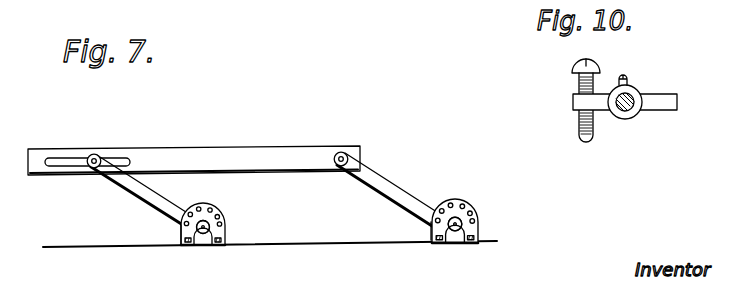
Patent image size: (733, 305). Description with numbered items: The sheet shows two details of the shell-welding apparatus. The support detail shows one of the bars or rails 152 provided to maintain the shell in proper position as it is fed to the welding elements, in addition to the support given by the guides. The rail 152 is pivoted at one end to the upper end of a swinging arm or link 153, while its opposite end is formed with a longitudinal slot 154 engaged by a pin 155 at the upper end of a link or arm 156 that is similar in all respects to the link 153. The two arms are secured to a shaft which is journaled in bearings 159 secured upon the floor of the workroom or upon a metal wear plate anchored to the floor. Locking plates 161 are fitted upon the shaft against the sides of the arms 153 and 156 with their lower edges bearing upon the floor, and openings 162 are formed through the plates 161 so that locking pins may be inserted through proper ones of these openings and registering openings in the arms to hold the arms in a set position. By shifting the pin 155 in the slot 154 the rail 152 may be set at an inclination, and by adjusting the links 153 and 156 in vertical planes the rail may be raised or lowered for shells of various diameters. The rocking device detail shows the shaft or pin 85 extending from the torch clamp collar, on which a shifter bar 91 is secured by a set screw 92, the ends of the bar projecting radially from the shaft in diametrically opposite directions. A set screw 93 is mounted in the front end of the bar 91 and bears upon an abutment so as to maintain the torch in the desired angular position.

In FIG. 7, the bar or rail 152 is at (194, 149).
In FIG. 7, the swinging arm or link 153 is at (382, 186).
In FIG. 7, the longitudinal slot 154 is at (63, 163).
In FIG. 7, the pin 155 is at (98, 157).
In FIG. 7, the link or arm 156 is at (137, 190).
In FIG. 7, the bearing 159 is at (198, 229).
In FIG. 7, the locking plate 161 is at (213, 205).
In FIG. 7, the opening 162 is at (225, 218).
In FIG. 10, the shaft or pin 85 is at (632, 107).
In FIG. 10, the shifter bar 91 is at (603, 112).
In FIG. 10, the set screw 92 is at (628, 79).
In FIG. 10, the set screw 93 is at (572, 70).